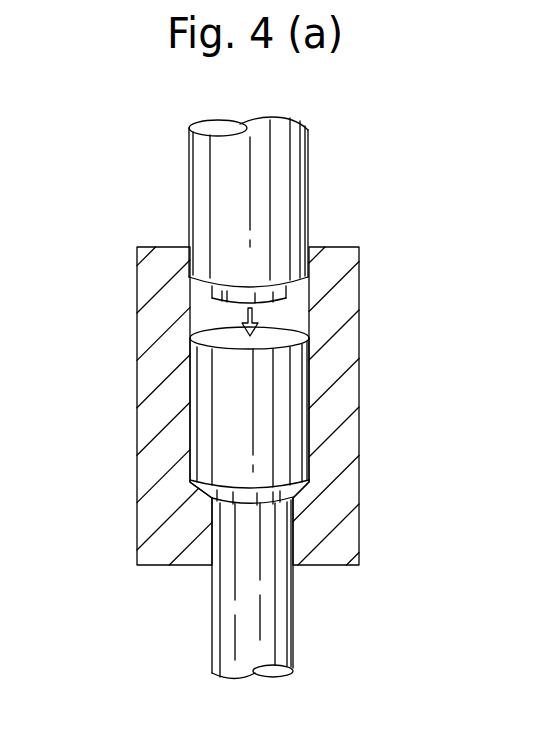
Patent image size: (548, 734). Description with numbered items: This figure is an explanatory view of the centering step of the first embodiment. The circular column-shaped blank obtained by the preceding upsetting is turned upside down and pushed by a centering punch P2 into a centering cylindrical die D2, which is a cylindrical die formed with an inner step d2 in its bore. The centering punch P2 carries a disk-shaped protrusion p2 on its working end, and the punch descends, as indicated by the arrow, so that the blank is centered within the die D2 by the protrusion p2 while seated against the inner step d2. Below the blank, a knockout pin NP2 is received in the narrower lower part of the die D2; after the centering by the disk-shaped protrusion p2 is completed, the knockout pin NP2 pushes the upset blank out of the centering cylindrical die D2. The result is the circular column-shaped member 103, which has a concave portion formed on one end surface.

The centering punch P2 is at (314, 173).
The disk-shaped protrusion p2 is at (288, 297).
The centering cylindrical die D2 is at (136, 300).
The circular column-shaped member 103 is at (207, 397).
The inner step d2 is at (300, 488).
The knockout pin NP2 is at (295, 635).